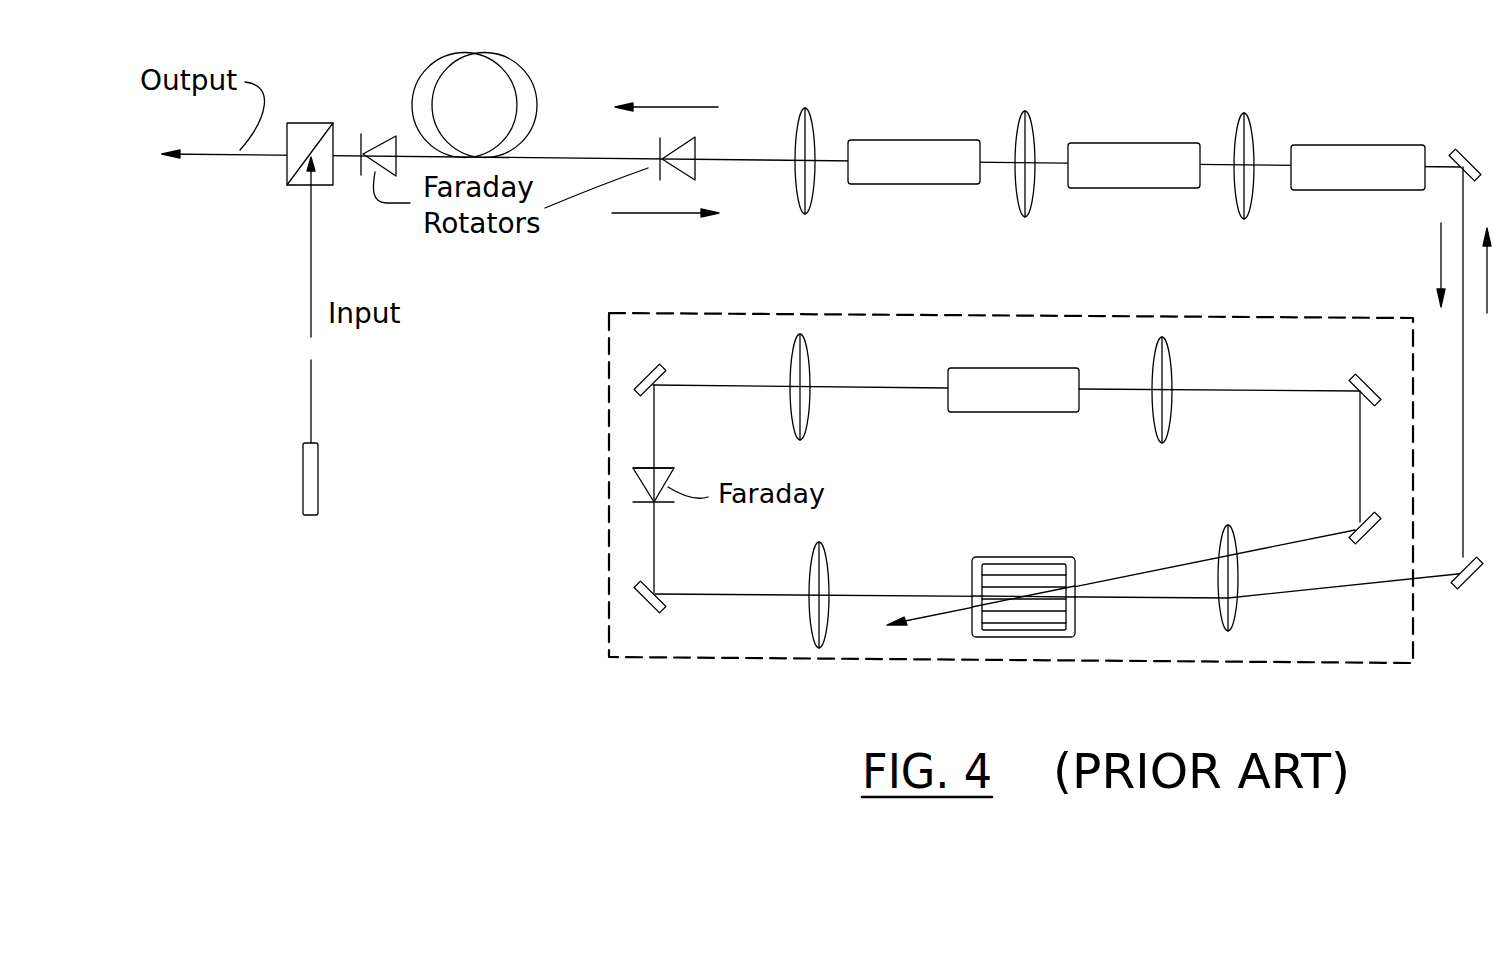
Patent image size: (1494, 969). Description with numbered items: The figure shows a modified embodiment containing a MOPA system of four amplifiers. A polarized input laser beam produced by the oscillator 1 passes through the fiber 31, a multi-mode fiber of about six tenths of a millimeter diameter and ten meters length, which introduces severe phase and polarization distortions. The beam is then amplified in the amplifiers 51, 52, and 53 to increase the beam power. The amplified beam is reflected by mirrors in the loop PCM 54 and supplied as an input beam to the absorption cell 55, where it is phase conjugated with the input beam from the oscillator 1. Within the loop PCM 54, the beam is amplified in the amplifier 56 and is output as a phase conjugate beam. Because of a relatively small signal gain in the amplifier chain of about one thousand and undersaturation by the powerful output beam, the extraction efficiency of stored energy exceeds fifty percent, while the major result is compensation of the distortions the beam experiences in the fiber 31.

The oscillator 1 is at (318, 480).
The fiber 31 is at (503, 55).
The amplifier 51 is at (936, 140).
The amplifier 52 is at (1154, 143).
The amplifier 53 is at (1377, 145).
The loop PCM 54 is at (950, 307).
The absorption cell 55 is at (1042, 642).
The amplifier 56 is at (1027, 368).